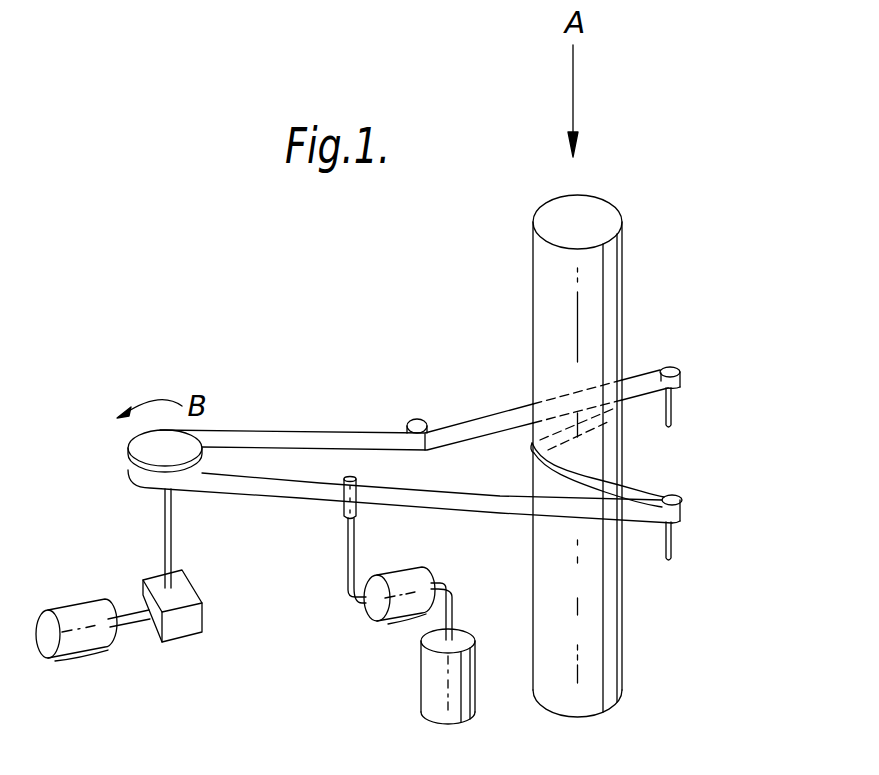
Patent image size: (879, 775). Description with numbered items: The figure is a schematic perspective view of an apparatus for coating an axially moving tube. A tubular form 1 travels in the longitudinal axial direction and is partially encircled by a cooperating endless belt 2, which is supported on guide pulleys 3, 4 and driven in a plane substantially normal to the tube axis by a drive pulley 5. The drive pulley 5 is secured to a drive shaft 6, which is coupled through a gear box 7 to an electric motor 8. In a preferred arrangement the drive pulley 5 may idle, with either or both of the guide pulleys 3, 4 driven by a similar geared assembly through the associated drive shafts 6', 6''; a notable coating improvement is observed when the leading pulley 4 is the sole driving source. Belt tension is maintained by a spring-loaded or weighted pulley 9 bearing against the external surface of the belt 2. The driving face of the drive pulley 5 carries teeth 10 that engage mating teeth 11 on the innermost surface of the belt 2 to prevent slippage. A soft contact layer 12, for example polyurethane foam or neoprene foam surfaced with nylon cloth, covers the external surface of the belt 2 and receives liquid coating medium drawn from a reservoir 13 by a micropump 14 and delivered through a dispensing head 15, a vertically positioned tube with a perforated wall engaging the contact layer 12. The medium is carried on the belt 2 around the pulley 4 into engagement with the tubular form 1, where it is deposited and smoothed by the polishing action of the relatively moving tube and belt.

The tubular form 1 is at (548, 687).
The endless belt 2 is at (353, 432).
The guide pulley 3 is at (672, 366).
The guide pulley 4 is at (682, 498).
The drive pulley 5 is at (130, 447).
The drive shaft 6 is at (107, 535).
The drive shaft 6' is at (685, 425).
The drive shaft 6'' is at (686, 569).
The gear box 7 is at (143, 582).
The electric motor 8 is at (82, 645).
The spring-loaded or weighted pulley 9 is at (420, 427).
The teeth 10 is at (220, 448).
The mating teeth 11 is at (287, 440).
The contact layer 12 is at (283, 495).
The reservoir 13 is at (433, 703).
The micropump 14 is at (398, 617).
The dispensing head 15 is at (357, 512).